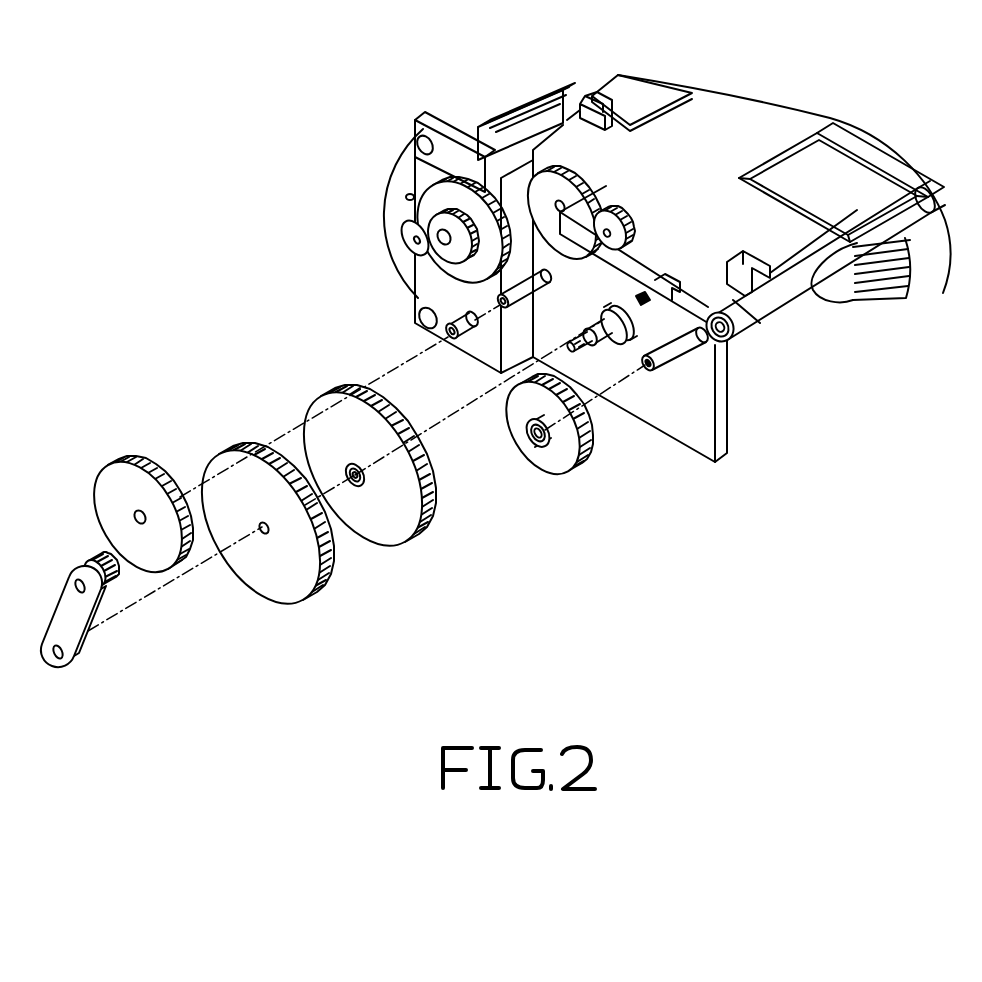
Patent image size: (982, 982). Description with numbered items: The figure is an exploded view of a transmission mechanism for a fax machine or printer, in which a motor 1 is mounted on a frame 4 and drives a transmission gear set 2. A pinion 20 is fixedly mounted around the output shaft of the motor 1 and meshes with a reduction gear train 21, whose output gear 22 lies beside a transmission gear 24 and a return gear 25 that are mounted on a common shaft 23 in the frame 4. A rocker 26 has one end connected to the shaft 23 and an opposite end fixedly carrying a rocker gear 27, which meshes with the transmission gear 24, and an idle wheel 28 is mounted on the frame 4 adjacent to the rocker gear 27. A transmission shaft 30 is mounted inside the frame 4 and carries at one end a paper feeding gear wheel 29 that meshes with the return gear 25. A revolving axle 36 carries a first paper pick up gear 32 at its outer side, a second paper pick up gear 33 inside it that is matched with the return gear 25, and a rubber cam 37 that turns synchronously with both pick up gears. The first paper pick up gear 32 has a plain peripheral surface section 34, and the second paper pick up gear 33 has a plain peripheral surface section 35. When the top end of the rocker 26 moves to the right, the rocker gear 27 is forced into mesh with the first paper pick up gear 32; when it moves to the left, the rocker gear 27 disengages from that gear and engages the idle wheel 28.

The motor 1 is at (400, 180).
The transmission gear set 2 is at (291, 333).
The frame 4 is at (752, 123).
The pinion 20 is at (403, 233).
The reduction gear train 21 is at (463, 270).
The output gear 22 is at (130, 487).
The shaft 23 is at (500, 358).
The transmission gear 24 is at (318, 582).
The return gear 25 is at (405, 525).
The rocker 26 is at (88, 627).
The rocker gear 27 is at (110, 580).
The idle wheel 28 is at (618, 219).
The paper feeding gear wheel 29 is at (588, 180).
The transmission shaft 30 is at (532, 187).
The first paper pick up gear 32 is at (542, 460).
The second paper pick up gear 33 is at (578, 457).
The plain peripheral surface section 34 is at (557, 390).
The plain peripheral surface section 35 is at (590, 430).
The revolving axle 36 is at (675, 350).
The rubber cam 37 is at (847, 297).